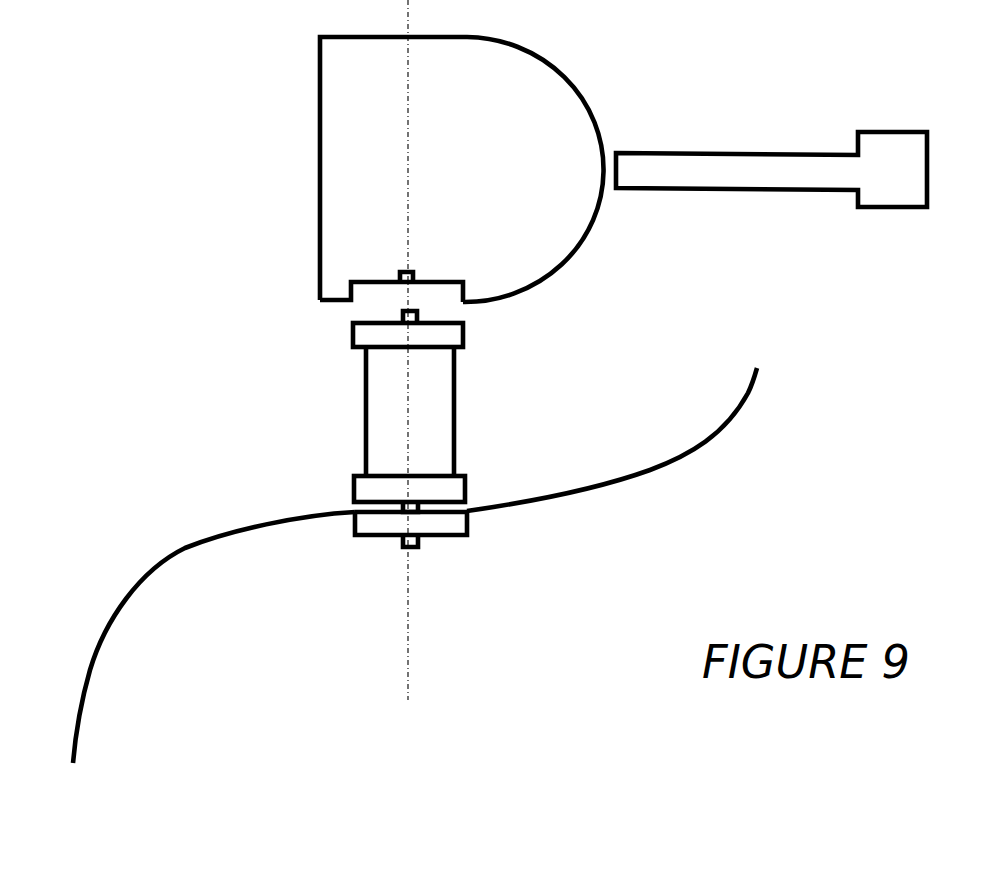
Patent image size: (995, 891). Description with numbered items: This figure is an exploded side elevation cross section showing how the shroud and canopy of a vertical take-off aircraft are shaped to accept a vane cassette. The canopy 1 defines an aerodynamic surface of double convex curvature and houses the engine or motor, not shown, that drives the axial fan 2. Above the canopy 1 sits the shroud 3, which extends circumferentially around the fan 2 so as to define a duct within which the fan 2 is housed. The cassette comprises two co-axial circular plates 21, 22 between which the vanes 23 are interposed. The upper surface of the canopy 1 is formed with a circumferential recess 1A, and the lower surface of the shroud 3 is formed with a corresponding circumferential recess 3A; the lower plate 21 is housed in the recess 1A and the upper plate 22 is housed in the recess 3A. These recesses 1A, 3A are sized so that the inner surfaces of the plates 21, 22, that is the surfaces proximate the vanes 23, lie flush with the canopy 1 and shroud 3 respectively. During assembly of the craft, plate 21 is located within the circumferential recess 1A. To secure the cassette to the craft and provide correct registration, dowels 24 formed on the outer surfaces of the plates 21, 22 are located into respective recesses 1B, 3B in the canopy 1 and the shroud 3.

The canopy 1 is at (188, 555).
The circumferential recess 1A is at (450, 521).
The recess 1B is at (422, 542).
The axial fan 2 is at (728, 182).
The shroud 3 is at (315, 122).
The circumferential recess 3A is at (362, 292).
The recess 3B is at (415, 275).
The circular plate 21 is at (367, 495).
The circular plate 22 is at (350, 327).
The vanes 23 is at (452, 432).
The dowels 24 is at (416, 318).